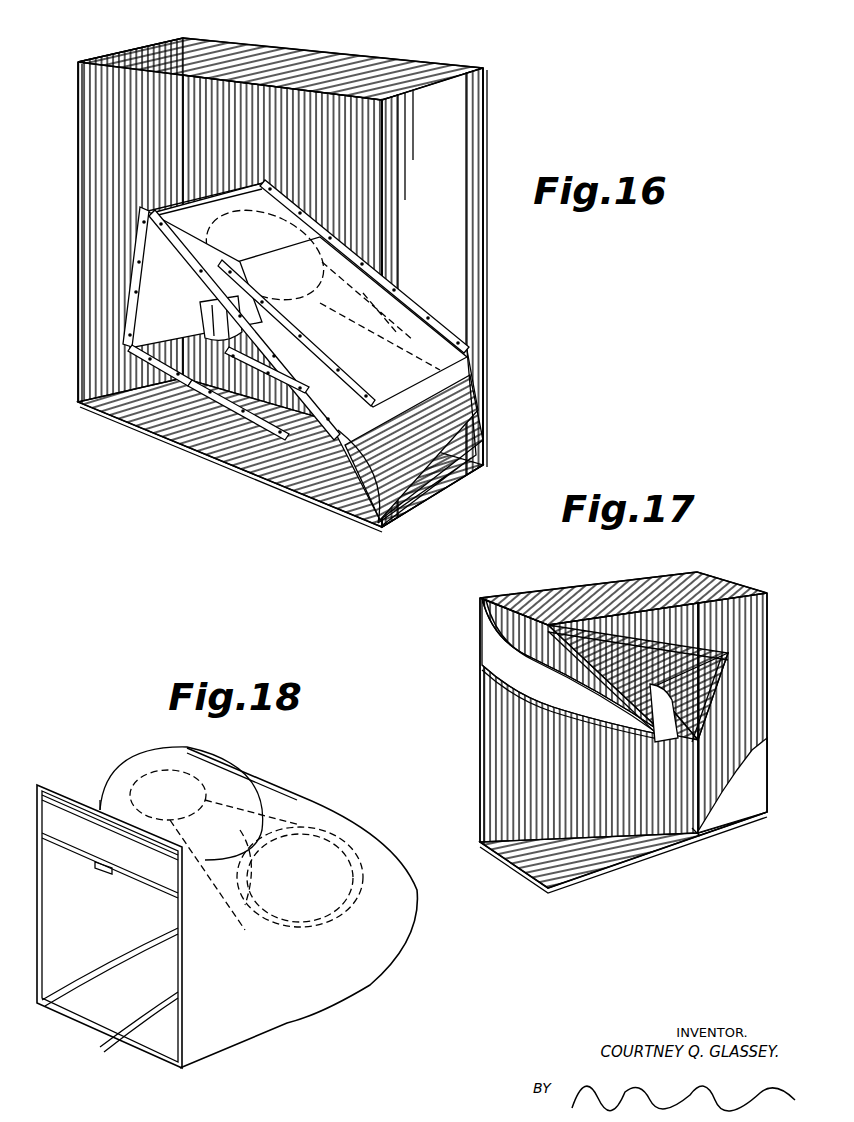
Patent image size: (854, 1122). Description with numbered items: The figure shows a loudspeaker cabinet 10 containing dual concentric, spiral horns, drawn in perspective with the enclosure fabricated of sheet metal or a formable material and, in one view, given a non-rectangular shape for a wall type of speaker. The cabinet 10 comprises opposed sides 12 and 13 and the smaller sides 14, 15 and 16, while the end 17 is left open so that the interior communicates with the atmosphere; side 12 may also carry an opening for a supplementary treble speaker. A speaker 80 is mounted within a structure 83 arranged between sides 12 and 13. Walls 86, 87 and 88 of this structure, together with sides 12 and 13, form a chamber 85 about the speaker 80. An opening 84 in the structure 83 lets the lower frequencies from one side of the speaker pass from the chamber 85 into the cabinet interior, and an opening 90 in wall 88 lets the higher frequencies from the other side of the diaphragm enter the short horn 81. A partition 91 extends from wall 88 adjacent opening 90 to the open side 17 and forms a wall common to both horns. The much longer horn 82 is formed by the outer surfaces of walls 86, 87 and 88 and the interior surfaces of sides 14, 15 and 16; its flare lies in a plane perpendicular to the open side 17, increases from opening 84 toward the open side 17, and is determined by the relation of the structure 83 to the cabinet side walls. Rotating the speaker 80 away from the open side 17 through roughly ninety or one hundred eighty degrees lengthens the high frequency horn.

In FIG. 16, the cabinet 10 is at (492, 128).
In FIG. 17, the cabinet 10 is at (719, 575).
In FIG. 17, the side 12 is at (750, 785).
In FIG. 16, the side 13 is at (483, 387).
In FIG. 17, the side 13 is at (487, 707).
In FIG. 16, the smaller side 14 is at (341, 62).
In FIG. 17, the smaller side 14 is at (523, 590).
In FIG. 16, the smaller side 15 is at (92, 160).
In FIG. 17, the smaller side 15 is at (750, 731).
In FIG. 16, the smaller side 16 is at (288, 462).
In FIG. 17, the smaller side 16 is at (620, 847).
In FIG. 16, the open end 17 is at (470, 278).
In FIG. 17, the open end 17 is at (513, 773).
In FIG. 16, the speaker 80 is at (207, 330).
In FIG. 17, the speaker 80 is at (650, 710).
In FIG. 18, the speaker 80 is at (273, 817).
In FIG. 16, the horn 81 is at (357, 403).
In FIG. 17, the horn 81 is at (485, 637).
In FIG. 18, the horn 81 is at (66, 823).
In FIG. 16, the horn 82 is at (451, 202).
In FIG. 17, the horn 82 is at (602, 780).
In FIG. 18, the horn 82 is at (109, 926).
In FIG. 16, the structure 83 is at (130, 270).
In FIG. 17, the structure 83 is at (730, 675).
In FIG. 16, the opening 84 is at (318, 425).
In FIG. 17, the opening 84 is at (583, 647).
In FIG. 16, the chamber 85 is at (170, 362).
In FIG. 17, the chamber 85 is at (697, 673).
In FIG. 16, the wall 86 is at (243, 397).
In FIG. 17, the wall 86 is at (627, 637).
In FIG. 16, the wall 87 is at (180, 289).
In FIG. 17, the wall 87 is at (717, 713).
In FIG. 16, the wall 88 is at (433, 447).
In FIG. 17, the wall 88 is at (522, 637).
In FIG. 16, the opening 90 is at (308, 203).
In FIG. 17, the opening 90 is at (697, 833).
In FIG. 18, the opening 90 is at (280, 937).
In FIG. 16, the partition 91 is at (397, 307).
In FIG. 17, the partition 91 is at (553, 707).
In FIG. 18, the partition 91 is at (110, 867).